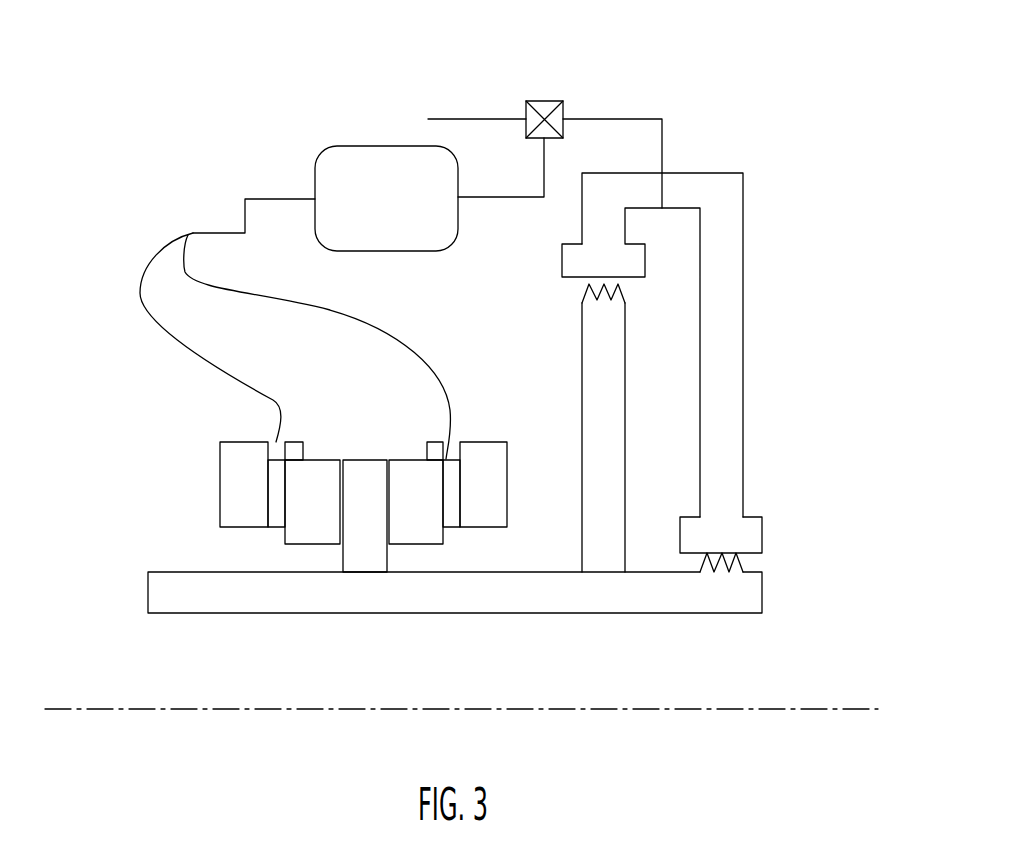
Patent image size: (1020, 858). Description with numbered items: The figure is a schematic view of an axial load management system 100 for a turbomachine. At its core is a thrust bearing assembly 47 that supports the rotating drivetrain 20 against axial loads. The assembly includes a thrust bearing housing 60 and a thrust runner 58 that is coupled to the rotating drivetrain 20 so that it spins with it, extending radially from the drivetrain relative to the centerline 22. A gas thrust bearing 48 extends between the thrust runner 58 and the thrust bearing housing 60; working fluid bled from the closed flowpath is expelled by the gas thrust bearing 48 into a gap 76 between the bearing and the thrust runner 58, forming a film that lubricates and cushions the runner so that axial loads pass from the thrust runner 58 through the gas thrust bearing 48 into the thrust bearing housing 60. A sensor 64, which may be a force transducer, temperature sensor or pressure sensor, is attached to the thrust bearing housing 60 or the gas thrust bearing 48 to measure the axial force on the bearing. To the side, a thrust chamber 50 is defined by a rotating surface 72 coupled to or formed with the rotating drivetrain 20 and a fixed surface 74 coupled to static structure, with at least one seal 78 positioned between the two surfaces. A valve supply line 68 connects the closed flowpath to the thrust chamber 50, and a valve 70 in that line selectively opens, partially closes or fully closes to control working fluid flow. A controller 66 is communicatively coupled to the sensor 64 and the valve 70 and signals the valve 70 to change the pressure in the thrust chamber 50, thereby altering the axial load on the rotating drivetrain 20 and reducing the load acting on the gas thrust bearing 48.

The axial load management system 100 is at (220, 82).
The rotating drivetrain 20 is at (468, 613).
The centerline 22 is at (678, 710).
The thrust bearing assembly 47 is at (123, 505).
The gas thrust bearing 48 is at (308, 544).
The thrust chamber 50 is at (752, 295).
The thrust runner 58 is at (365, 459).
The thrust bearing housing 60 is at (220, 484).
The sensor 64 is at (268, 507).
The controller 66 is at (403, 206).
The valve supply line 68 is at (623, 118).
The valve 70 is at (544, 101).
The rotating surface 72 is at (582, 334).
The fixed surface 74 is at (732, 380).
The gap 76 is at (388, 452).
The seal 78 is at (583, 298).